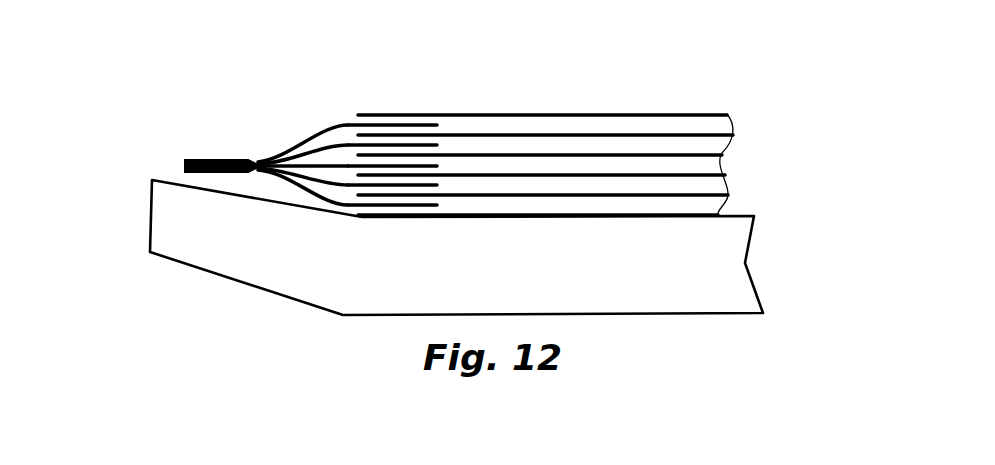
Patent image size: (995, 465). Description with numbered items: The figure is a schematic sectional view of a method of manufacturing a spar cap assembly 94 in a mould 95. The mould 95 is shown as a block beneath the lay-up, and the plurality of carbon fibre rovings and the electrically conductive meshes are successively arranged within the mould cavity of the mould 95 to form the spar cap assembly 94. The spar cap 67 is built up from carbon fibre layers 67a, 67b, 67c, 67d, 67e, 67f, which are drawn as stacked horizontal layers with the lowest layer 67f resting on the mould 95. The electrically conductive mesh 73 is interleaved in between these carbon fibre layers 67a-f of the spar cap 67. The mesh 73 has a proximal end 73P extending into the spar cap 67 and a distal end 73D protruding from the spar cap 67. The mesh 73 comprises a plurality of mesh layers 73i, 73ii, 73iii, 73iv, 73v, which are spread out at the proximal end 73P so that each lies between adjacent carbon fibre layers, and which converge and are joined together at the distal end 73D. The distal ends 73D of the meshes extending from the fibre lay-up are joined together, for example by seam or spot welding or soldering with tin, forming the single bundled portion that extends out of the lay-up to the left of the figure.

The spar cap assembly 94 is at (132, 72).
The mould 95 is at (628, 285).
The electrically conductive mesh 73 is at (269, 123).
The distal end of the mesh 73D is at (278, 150).
The first mesh layer 73i is at (312, 136).
The second mesh layer 73ii is at (332, 143).
The third mesh layer 73iii is at (296, 166).
The fourth mesh layer 73iv is at (318, 182).
The fifth mesh layer 73v is at (352, 206).
The proximal end of the mesh 73P is at (372, 133).
The spar cap 67 is at (462, 94).
The first carbon fibre layer 67a is at (577, 115).
The second carbon fibre layer 67b is at (630, 133).
The third carbon fibre layer 67c is at (657, 153).
The fourth carbon fibre layer 67d is at (690, 175).
The fifth carbon fibre layer 67e is at (675, 197).
The sixth carbon fibre layer 67f is at (593, 218).